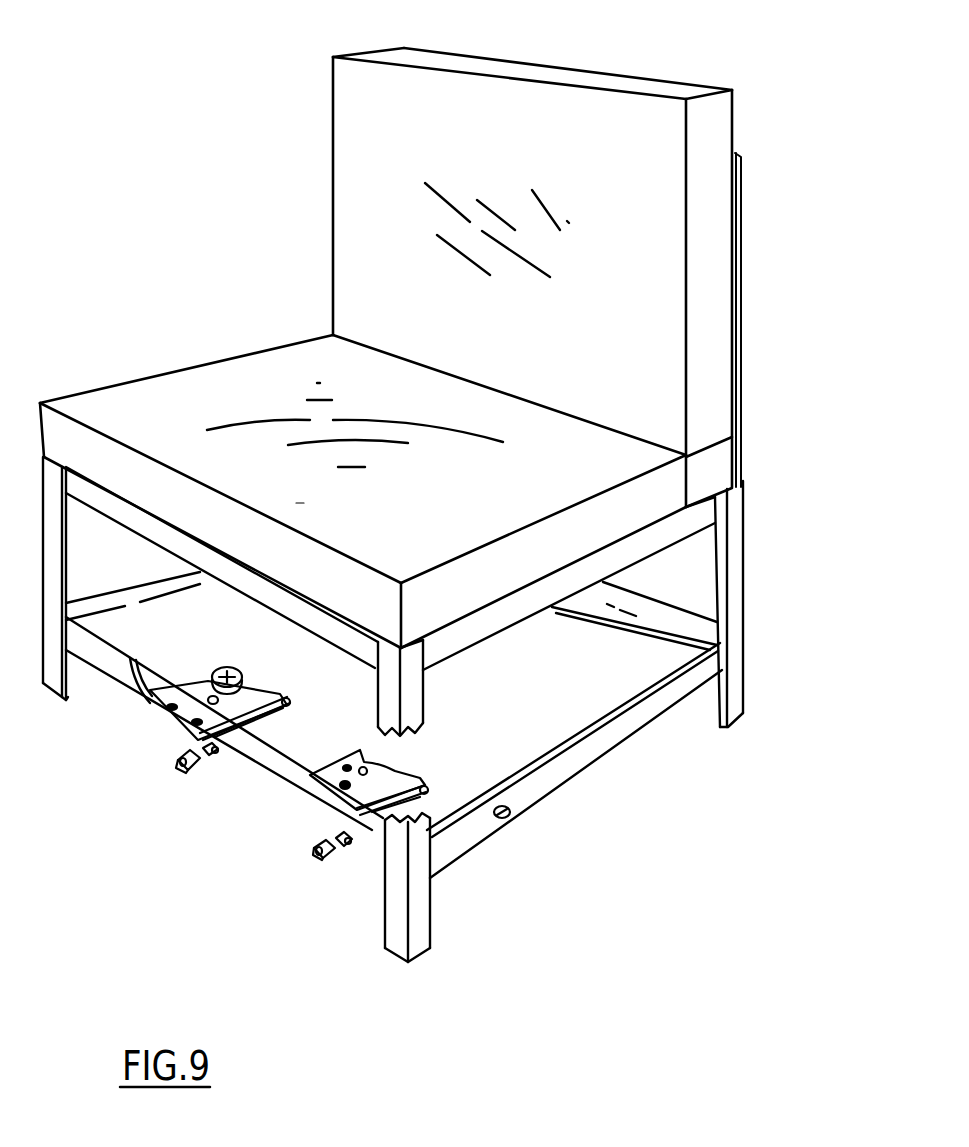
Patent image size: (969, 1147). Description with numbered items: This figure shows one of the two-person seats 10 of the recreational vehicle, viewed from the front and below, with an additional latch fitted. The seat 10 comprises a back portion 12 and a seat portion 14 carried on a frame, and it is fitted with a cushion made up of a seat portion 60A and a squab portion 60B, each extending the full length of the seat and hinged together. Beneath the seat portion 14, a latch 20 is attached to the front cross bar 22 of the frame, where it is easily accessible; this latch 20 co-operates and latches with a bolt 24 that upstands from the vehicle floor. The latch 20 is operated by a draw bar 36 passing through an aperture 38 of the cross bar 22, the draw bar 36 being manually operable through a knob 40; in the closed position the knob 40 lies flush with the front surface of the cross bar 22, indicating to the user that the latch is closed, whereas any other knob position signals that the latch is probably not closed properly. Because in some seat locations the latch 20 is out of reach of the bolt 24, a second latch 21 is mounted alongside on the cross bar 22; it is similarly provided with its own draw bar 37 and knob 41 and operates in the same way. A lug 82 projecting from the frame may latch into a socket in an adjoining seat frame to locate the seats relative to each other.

The seat 10 is at (660, 323).
The back portion 12 is at (742, 180).
The seat portion 14 is at (405, 528).
The seat portion of cushion 60A is at (247, 378).
The squab portion of cushion 60B is at (358, 183).
The latch 20 is at (253, 697).
The second latch 21 is at (410, 780).
The front cross bar 22 is at (127, 697).
The bolt 24 is at (220, 670).
The draw bar 36 is at (260, 728).
The draw bar 37 is at (378, 825).
The aperture 38 is at (213, 755).
The knob 40 is at (182, 773).
The knob 41 is at (313, 851).
The lug 82 is at (512, 812).